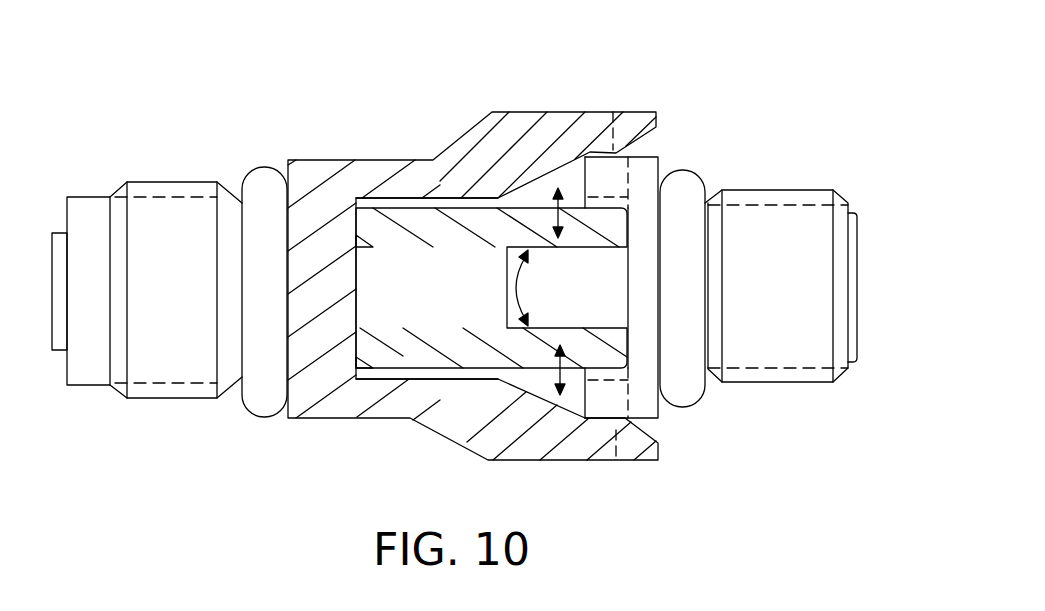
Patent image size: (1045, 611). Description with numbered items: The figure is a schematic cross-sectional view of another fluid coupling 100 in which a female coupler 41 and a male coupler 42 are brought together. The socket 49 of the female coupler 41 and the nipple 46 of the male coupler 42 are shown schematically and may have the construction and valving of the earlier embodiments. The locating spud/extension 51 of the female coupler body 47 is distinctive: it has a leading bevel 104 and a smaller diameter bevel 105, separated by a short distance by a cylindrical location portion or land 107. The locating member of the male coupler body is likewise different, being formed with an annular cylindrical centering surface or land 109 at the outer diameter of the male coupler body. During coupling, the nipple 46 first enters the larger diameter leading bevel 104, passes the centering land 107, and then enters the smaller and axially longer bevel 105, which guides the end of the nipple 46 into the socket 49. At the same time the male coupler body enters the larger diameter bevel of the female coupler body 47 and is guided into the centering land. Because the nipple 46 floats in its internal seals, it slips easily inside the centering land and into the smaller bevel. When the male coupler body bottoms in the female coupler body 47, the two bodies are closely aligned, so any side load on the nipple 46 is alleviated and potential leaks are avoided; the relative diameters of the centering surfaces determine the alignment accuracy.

The fluid coupling 100 is at (383, 93).
The female coupler 41 is at (316, 430).
The male coupler 42 is at (848, 383).
The nipple 46 is at (430, 368).
The female coupler body 47 is at (310, 158).
The socket 49 is at (405, 200).
The locating spud/extension 51 is at (553, 105).
The leading bevel 104 is at (648, 130).
The smaller diameter bevel 105 is at (533, 392).
The cylindrical location portion or land 107 is at (606, 145).
The annular cylindrical centering surface or land 109 is at (644, 418).